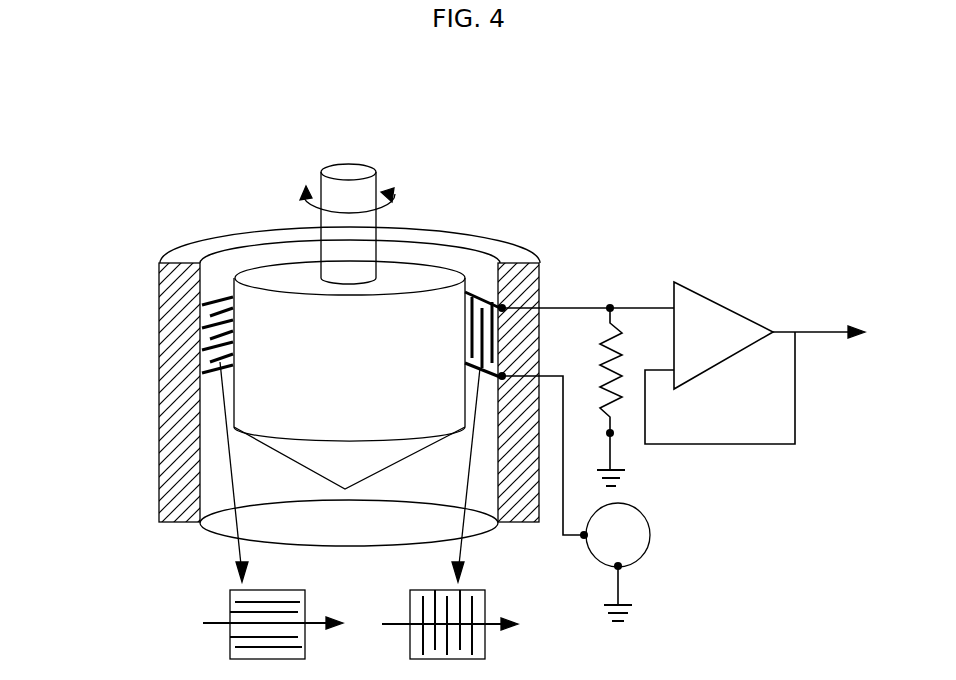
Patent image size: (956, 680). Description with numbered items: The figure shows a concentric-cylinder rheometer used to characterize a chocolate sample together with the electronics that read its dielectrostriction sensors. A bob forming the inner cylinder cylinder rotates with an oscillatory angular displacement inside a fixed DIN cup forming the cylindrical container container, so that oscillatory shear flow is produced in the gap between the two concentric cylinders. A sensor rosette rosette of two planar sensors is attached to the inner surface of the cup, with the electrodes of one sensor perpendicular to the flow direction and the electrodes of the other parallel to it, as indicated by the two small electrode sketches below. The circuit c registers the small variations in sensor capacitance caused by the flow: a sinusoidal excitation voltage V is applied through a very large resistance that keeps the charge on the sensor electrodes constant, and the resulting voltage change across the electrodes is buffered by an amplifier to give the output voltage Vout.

The inner cylinder is at (352, 258).
The cylindrical container is at (186, 378).
The sensor rosette is at (212, 324).
The circuit c is at (646, 389).
The output voltage Vout is at (850, 331).
The excitation voltage V is at (713, 562).